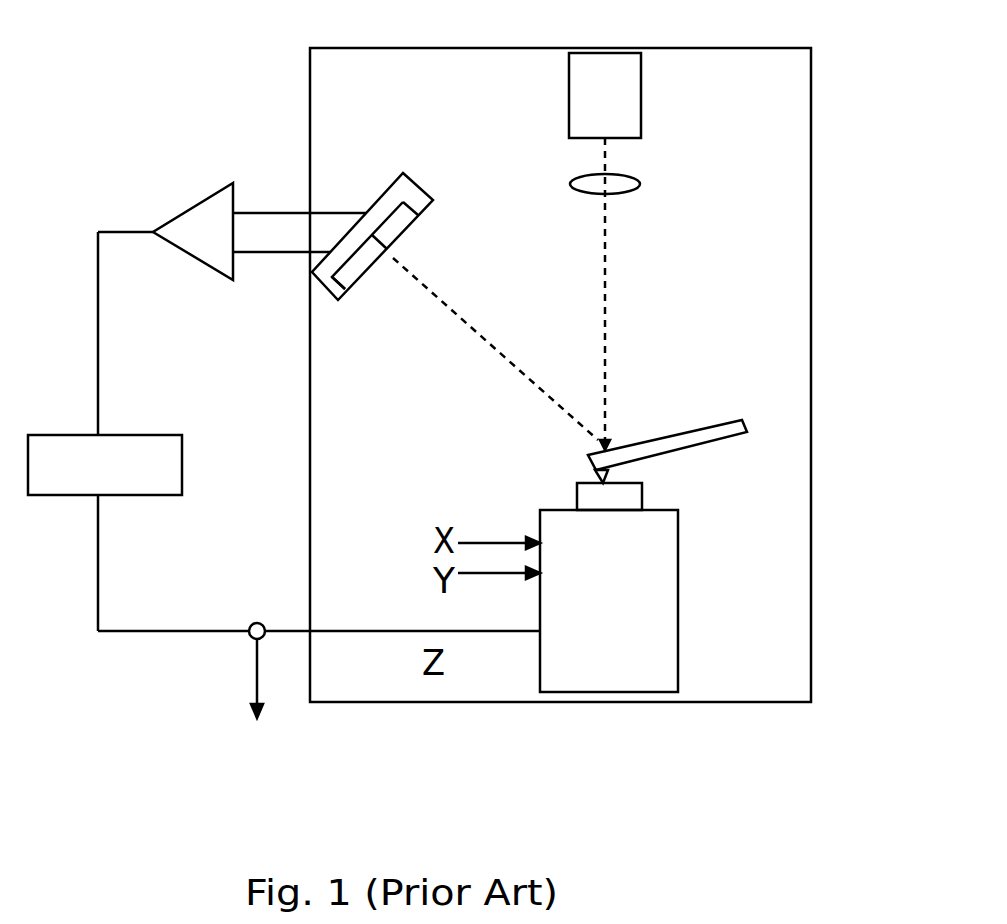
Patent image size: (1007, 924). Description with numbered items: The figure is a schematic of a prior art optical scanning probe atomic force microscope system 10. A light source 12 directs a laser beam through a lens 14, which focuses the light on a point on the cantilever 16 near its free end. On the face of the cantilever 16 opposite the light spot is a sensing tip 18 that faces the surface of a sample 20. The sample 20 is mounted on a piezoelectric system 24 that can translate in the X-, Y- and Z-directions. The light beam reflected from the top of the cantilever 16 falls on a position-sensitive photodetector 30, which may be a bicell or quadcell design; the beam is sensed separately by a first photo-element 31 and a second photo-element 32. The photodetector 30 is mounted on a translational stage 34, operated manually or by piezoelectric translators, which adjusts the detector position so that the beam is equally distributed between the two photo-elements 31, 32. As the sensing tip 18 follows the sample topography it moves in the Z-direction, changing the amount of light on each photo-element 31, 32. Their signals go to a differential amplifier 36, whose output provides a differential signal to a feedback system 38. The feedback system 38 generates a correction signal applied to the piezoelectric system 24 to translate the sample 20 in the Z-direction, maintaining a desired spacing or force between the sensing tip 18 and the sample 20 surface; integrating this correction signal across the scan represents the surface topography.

The atomic force microscope system 10 is at (788, 383).
The light source 12 is at (623, 97).
The lens 14 is at (627, 184).
The cantilever 16 is at (721, 432).
The sensing tip 18 is at (610, 470).
The sample 20 is at (600, 495).
The piezoelectric system 24 is at (657, 580).
The position-sensitive photodetector 30 is at (403, 233).
The first photo-element 31 is at (397, 223).
The second photo-element 32 is at (362, 258).
The translational stage 34 is at (418, 197).
The differential amplifier 36 is at (204, 238).
The feedback system 38 is at (165, 463).